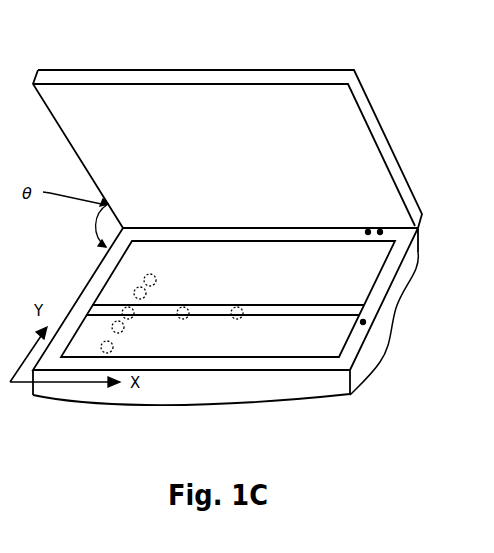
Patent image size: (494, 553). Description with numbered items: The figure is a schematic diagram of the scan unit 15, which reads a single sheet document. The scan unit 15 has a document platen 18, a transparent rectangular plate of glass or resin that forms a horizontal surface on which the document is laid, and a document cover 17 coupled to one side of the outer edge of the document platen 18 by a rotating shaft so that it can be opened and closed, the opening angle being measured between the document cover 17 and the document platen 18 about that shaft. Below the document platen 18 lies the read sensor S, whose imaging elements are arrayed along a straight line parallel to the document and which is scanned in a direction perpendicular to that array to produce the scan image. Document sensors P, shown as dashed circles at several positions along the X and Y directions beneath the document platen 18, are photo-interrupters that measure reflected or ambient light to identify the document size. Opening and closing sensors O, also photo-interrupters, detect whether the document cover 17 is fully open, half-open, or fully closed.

The scan unit 15 is at (223, 60).
The document cover 17 is at (187, 83).
The document platen 18 is at (181, 312).
The read sensor S is at (136, 289).
The document sensors P is at (318, 418).
The opening and closing sensors O is at (381, 230).